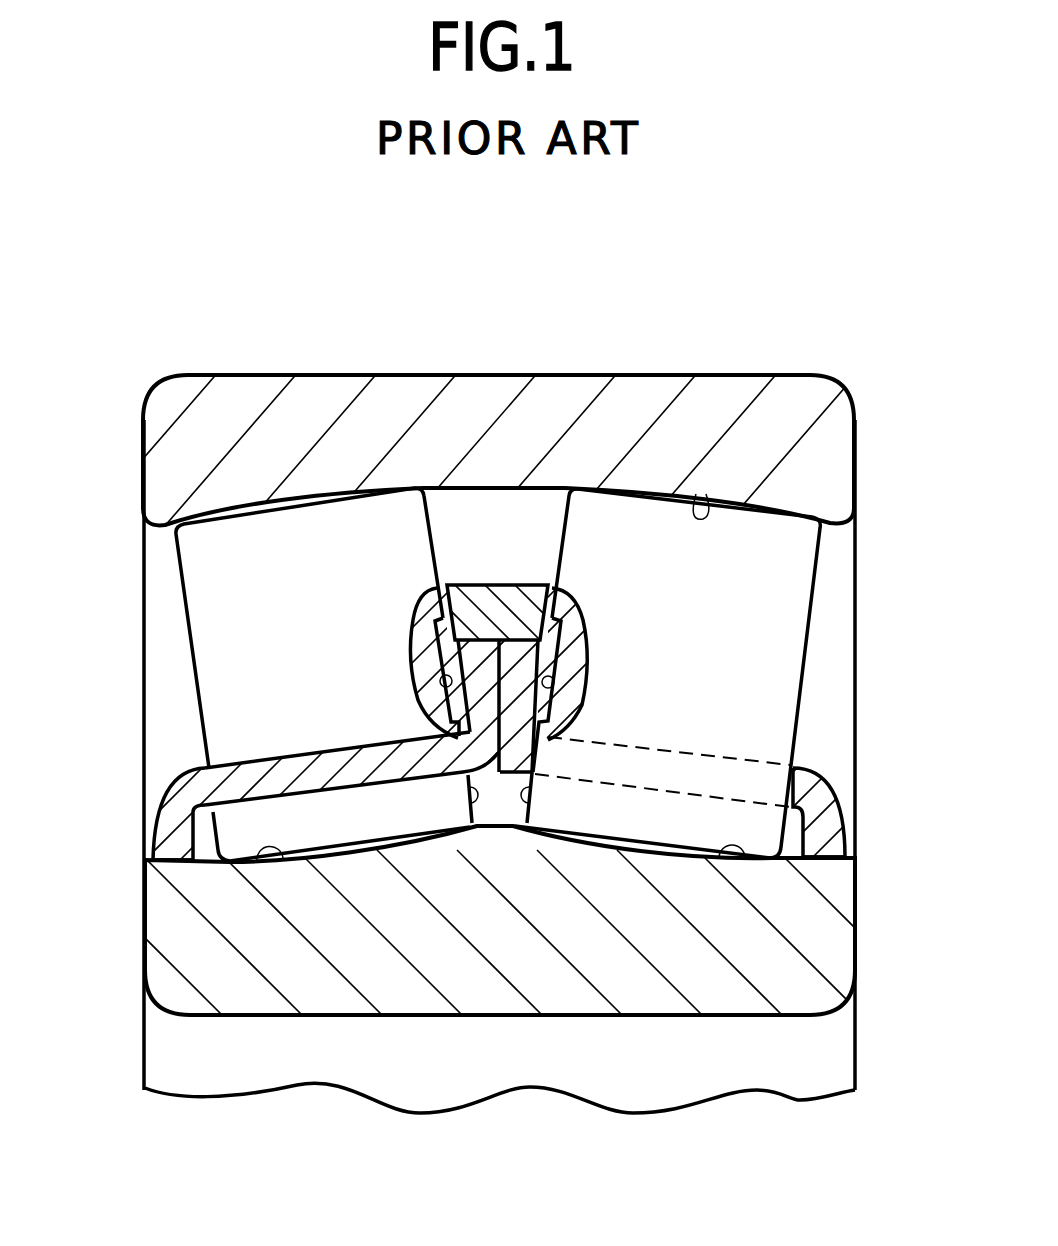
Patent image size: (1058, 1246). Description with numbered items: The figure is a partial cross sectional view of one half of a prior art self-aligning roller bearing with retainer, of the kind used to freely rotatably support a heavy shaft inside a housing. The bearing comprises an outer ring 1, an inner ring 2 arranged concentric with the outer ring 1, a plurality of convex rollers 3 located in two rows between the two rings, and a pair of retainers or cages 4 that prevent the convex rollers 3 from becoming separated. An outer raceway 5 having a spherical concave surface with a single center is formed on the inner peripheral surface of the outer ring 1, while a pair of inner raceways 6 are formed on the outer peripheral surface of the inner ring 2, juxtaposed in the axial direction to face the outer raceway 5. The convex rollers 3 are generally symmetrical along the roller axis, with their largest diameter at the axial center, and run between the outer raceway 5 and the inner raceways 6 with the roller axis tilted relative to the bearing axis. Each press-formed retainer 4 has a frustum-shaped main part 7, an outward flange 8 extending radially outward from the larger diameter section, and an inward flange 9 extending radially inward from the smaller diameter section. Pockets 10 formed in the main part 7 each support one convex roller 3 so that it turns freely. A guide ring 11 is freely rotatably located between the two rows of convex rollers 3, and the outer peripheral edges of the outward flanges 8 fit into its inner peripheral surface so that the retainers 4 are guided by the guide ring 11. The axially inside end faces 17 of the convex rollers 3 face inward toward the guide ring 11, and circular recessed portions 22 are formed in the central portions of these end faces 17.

The outer ring 1 is at (632, 393).
The inner ring 2 is at (832, 945).
The convex rollers 3 is at (192, 586).
The retainers or cages 4 is at (173, 790).
The outer raceway 5 is at (705, 500).
The inner raceways 6 is at (258, 850).
The main part 7 is at (290, 765).
The outward flange 8 is at (462, 658).
The inward flange 9 is at (167, 830).
The pockets 10 is at (793, 778).
The guide ring 11 is at (496, 582).
The axially inside end faces 17 is at (467, 802).
The circular recessed portions 22 is at (440, 683).